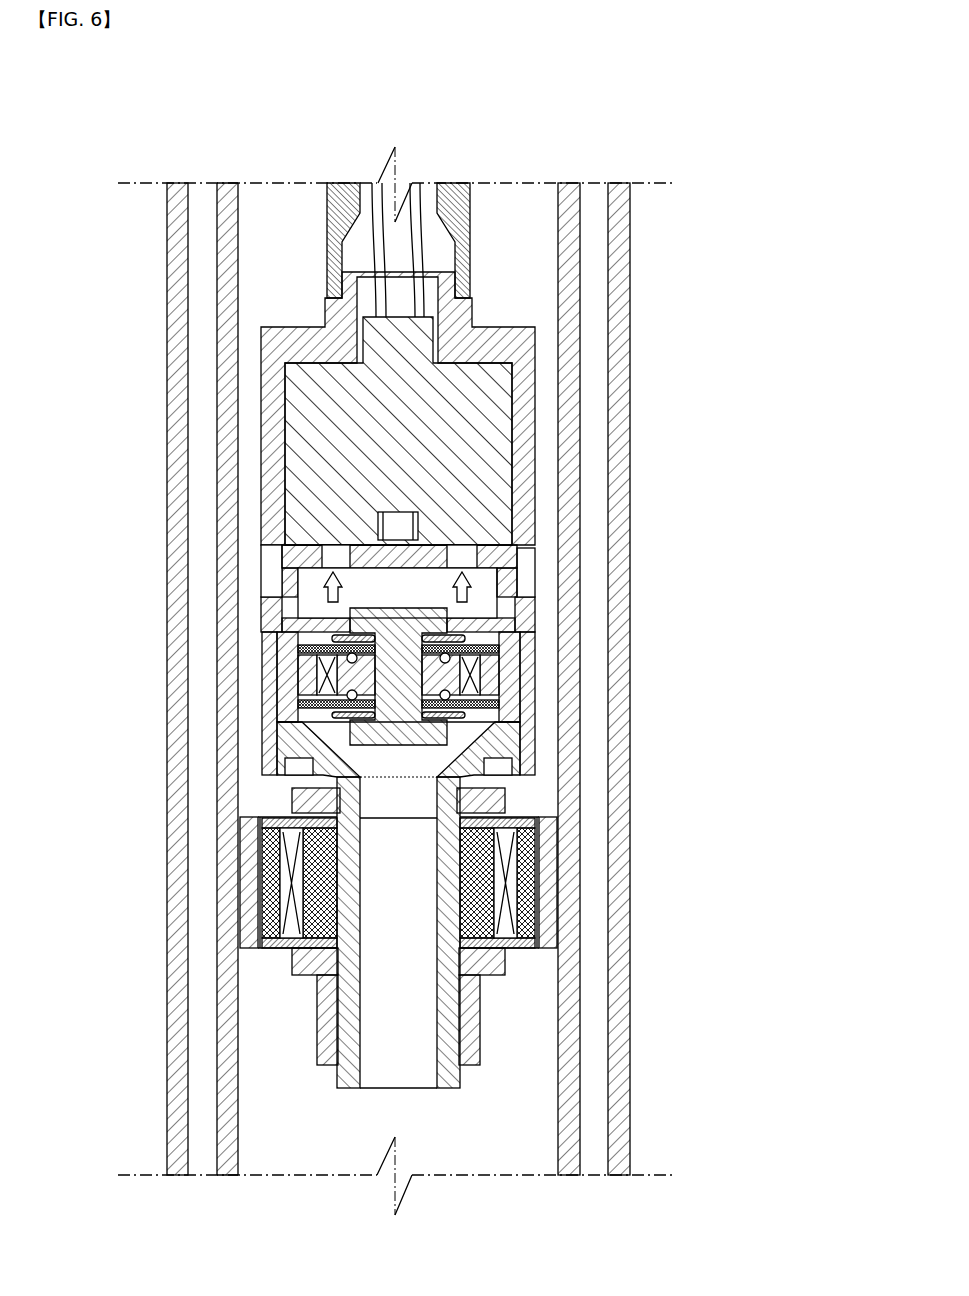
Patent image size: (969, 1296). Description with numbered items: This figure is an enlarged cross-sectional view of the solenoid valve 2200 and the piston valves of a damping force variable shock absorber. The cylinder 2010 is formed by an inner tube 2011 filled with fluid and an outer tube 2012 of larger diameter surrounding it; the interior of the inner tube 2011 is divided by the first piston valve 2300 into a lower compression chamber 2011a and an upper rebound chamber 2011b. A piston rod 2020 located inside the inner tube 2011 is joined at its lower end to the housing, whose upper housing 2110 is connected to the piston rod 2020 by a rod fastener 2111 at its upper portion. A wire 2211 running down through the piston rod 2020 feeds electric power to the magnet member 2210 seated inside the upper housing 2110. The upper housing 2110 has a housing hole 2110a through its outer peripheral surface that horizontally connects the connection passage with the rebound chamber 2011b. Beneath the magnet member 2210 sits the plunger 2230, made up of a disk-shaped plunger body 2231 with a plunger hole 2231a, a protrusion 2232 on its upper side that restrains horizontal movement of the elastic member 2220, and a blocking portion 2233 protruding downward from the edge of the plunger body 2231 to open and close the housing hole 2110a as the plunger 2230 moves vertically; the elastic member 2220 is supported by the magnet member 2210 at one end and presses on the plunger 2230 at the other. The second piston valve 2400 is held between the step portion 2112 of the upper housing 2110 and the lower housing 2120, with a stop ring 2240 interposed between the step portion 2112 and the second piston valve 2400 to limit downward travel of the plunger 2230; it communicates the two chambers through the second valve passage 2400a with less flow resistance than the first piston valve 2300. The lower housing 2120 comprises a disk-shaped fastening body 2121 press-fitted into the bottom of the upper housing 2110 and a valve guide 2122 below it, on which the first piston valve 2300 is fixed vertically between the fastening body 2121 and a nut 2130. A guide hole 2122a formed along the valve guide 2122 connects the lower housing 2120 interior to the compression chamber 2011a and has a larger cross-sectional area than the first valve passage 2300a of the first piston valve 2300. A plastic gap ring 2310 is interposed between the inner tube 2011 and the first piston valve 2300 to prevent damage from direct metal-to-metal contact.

The cylinder 2010 is at (424, 679).
The inner tube 2011 is at (393, 679).
The compression chamber 2011a is at (255, 1107).
The rebound chamber 2011b is at (270, 244).
The outer tube 2012 is at (615, 275).
The piston rod 2020 is at (430, 229).
The wire 2211 is at (414, 197).
The solenoid valve 2200 is at (429, 678).
The upper housing 2110 is at (392, 678).
The housing hole 2110a is at (273, 584).
The rod fastener 2111 is at (343, 290).
The step portion 2112 is at (520, 640).
The lower housing 2120 is at (392, 905).
The fastening body 2121 is at (285, 740).
The valve guide 2122 is at (320, 985).
The guide hole 2122a is at (375, 1027).
The nut 2130 is at (465, 1020).
The magnet member 2210 is at (490, 412).
The elastic member 2220 is at (418, 521).
The plunger 2230 is at (537, 598).
The plunger body 2231 is at (497, 600).
The plunger hole 2231a is at (508, 587).
The protrusion 2232 is at (462, 559).
The blocking portion 2233 is at (500, 625).
The stop ring 2240 is at (447, 630).
The second piston valve 2400 is at (282, 676).
The second valve passage 2400a is at (315, 680).
The first piston valve 2300 is at (201, 882).
The first valve passage 2300a is at (280, 880).
The gap ring 2310 is at (540, 845).